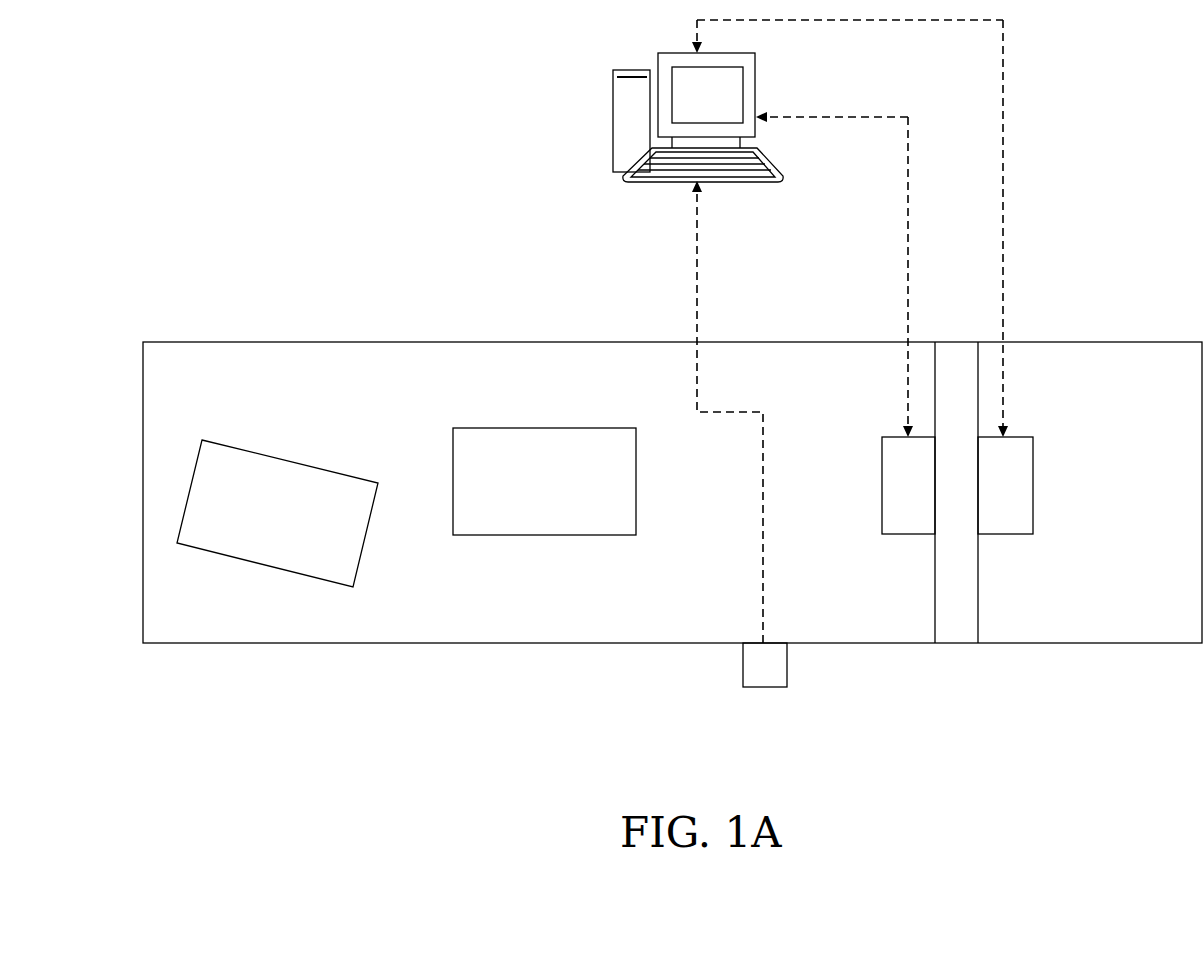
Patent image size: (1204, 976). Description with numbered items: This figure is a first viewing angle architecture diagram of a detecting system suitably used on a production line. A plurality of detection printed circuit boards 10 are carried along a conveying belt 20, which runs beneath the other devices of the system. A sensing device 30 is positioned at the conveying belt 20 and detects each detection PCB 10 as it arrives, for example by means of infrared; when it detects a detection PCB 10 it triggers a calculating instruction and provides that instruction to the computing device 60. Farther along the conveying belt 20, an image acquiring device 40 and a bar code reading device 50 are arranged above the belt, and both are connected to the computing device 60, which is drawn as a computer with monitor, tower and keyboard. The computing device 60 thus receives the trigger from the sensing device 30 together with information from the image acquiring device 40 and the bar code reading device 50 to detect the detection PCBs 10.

The detection printed circuit board 10 is at (328, 518).
The conveying belt 20 is at (1151, 388).
The sensing device 30 is at (763, 666).
The image acquiring device 40 is at (915, 483).
The bar code reading device 50 is at (1010, 483).
The computing device 60 is at (684, 111).